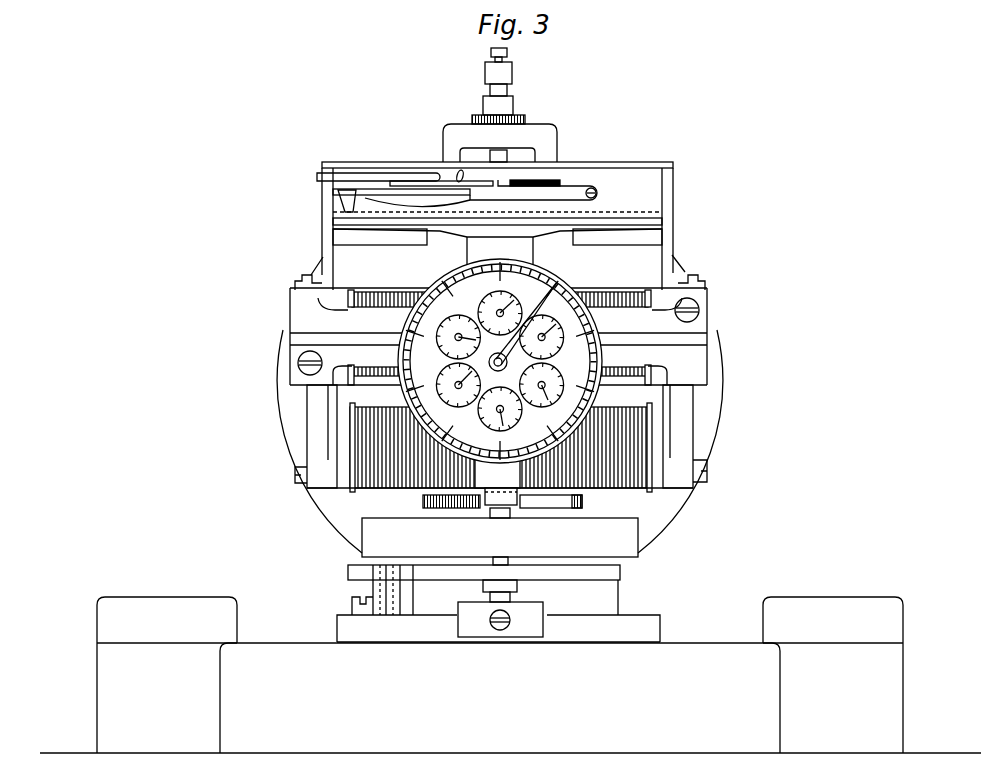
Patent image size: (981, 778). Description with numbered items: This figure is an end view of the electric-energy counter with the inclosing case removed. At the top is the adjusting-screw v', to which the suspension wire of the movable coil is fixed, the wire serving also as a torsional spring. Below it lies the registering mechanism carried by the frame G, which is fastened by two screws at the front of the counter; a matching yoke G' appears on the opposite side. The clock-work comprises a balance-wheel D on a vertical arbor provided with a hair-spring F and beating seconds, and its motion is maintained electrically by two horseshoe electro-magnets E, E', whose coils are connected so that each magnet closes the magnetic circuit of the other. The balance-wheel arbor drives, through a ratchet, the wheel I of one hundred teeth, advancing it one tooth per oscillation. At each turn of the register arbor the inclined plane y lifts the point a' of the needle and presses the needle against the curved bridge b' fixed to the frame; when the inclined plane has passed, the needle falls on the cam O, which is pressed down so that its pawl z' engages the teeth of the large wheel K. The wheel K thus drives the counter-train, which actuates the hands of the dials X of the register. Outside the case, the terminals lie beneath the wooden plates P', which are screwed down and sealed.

The adjusting-screw v' is at (500, 102).
The bridge b' is at (498, 218).
The point of the needle a' is at (363, 181).
The pawl z' is at (377, 210).
The inclined plane y is at (500, 186).
The large wheel K is at (497, 222).
The frame G is at (395, 381).
The magnet yoke G' is at (603, 381).
The horseshoe electro-magnet E is at (424, 391).
The horseshoe electro-magnet E' is at (576, 391).
The dials of the register X is at (500, 361).
The wheel I is at (494, 505).
The balance-wheel D is at (500, 537).
The hair-spring F is at (484, 572).
The cam O is at (382, 590).
The wooden plates P' is at (500, 675).